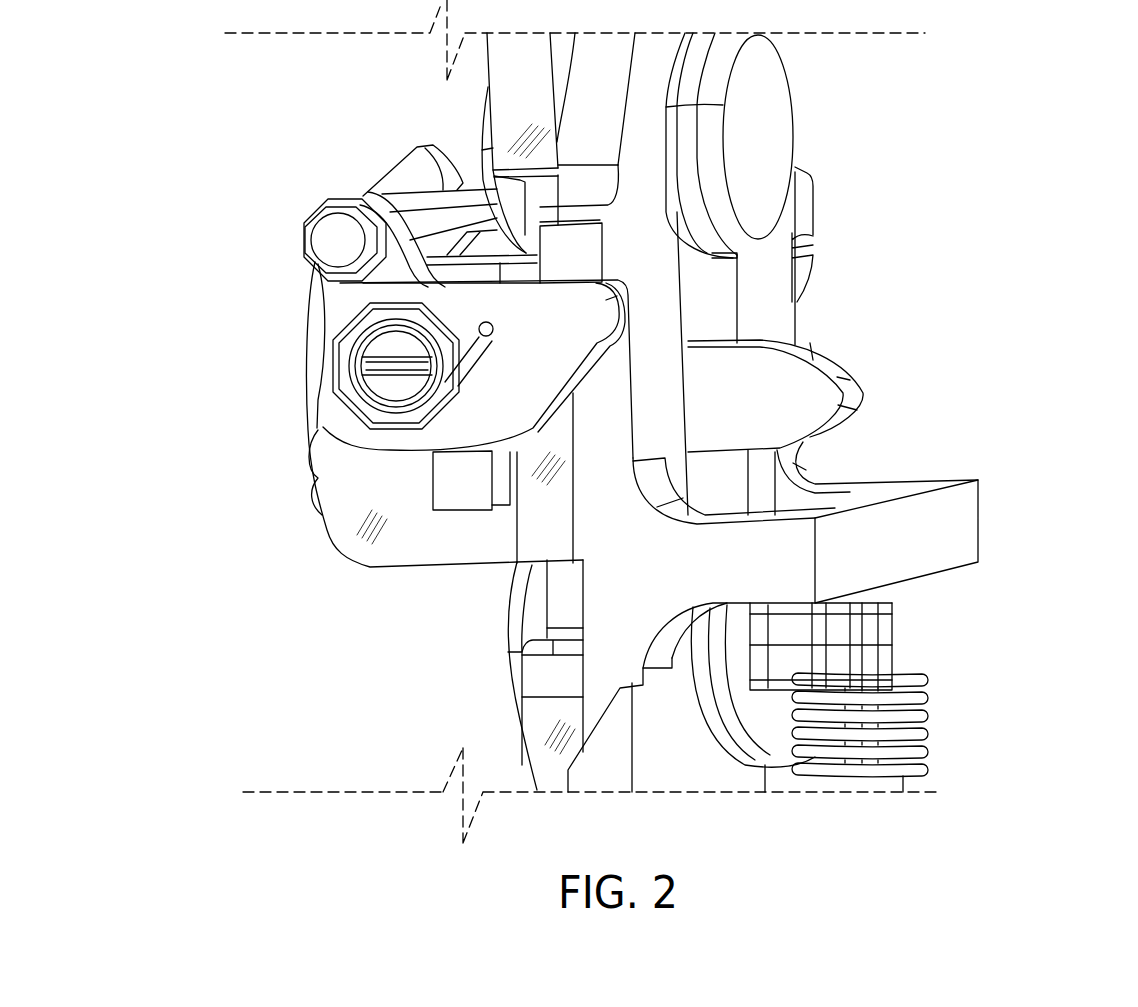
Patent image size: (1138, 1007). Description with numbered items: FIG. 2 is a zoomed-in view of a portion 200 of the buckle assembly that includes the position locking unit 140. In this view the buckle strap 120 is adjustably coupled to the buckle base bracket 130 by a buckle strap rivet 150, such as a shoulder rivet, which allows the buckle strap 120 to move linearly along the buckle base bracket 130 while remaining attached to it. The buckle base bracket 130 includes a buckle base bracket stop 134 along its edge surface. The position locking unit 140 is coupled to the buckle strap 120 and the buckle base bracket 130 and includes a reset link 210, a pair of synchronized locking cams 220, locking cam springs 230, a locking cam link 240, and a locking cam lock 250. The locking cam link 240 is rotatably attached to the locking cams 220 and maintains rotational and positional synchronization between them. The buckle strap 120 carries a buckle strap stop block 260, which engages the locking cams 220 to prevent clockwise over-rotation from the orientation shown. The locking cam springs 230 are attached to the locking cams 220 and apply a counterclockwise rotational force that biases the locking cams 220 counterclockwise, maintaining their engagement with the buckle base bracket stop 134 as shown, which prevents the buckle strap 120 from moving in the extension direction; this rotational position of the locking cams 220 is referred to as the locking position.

The portion 200 is at (1030, 140).
The buckle strap 120 is at (517, 85).
The buckle base bracket stop 134 is at (592, 259).
The locking cam lock 250 is at (393, 160).
The locking cam link 240 is at (310, 222).
The position locking unit 140 is at (212, 298).
The locking cam 220 is at (552, 368).
The locking cam spring 230 is at (357, 388).
The buckle strap rivet 150 is at (763, 122).
The buckle base bracket 130 is at (795, 310).
The reset link 210 is at (862, 373).
The buckle strap stop block 260 is at (478, 495).